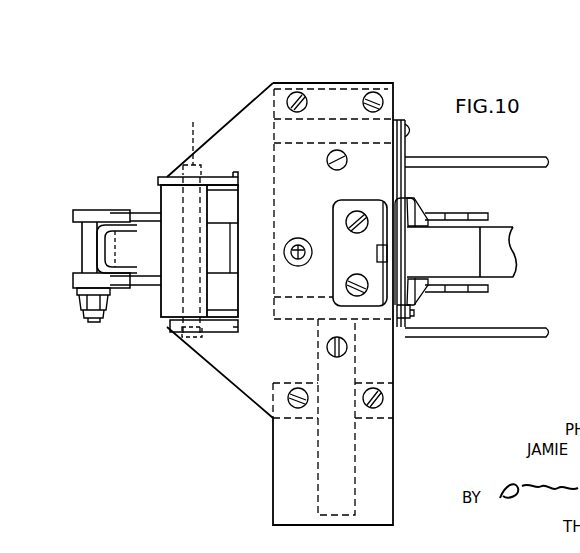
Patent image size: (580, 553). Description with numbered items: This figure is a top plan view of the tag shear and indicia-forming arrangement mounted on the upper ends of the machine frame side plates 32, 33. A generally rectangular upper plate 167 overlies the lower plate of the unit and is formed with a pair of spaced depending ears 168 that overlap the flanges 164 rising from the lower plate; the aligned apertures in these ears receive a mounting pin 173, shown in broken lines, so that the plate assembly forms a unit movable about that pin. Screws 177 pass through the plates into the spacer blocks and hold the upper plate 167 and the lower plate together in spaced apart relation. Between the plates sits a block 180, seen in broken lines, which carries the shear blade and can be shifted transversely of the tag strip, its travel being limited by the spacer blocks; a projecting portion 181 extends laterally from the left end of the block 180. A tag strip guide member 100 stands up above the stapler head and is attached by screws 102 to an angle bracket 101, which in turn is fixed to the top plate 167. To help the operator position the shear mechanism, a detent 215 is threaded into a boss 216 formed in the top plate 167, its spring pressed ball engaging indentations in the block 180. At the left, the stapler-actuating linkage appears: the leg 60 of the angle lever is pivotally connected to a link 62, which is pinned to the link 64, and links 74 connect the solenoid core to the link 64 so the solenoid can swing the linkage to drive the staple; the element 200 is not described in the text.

The frame side plate 32 is at (455, 338).
The frame side plate 33 is at (464, 157).
The leg of angle lever 60 is at (147, 213).
The link 62 is at (121, 268).
The link 64 is at (73, 222).
The links 74 is at (82, 210).
The guide member 100 is at (419, 213).
The angle bracket 101 is at (377, 212).
The screws 102 is at (377, 252).
The flanges 164 is at (163, 182).
The upper plate 167 is at (273, 477).
The depending ears 168 is at (168, 177).
The mounting pin 173 is at (195, 141).
The screws 177 is at (292, 92).
The block 180 is at (273, 160).
The projecting portion 181 is at (353, 481).
The block section 200 is at (223, 268).
The detent 215 is at (307, 261).
The boss 216 is at (294, 240).